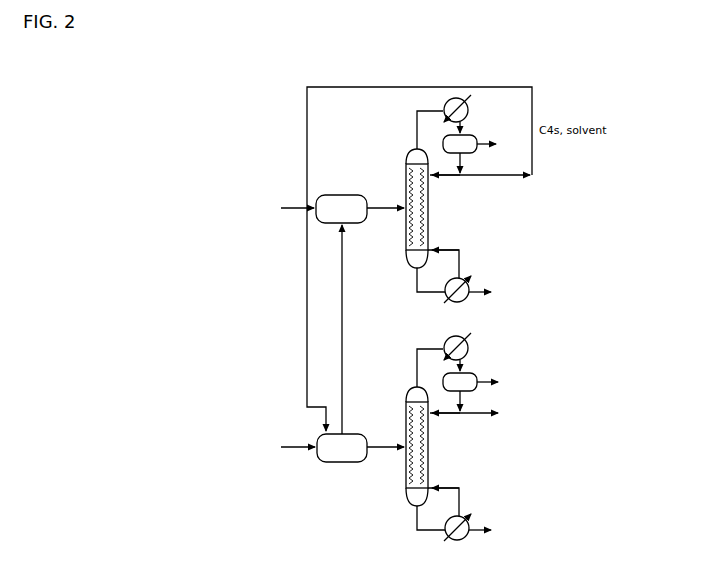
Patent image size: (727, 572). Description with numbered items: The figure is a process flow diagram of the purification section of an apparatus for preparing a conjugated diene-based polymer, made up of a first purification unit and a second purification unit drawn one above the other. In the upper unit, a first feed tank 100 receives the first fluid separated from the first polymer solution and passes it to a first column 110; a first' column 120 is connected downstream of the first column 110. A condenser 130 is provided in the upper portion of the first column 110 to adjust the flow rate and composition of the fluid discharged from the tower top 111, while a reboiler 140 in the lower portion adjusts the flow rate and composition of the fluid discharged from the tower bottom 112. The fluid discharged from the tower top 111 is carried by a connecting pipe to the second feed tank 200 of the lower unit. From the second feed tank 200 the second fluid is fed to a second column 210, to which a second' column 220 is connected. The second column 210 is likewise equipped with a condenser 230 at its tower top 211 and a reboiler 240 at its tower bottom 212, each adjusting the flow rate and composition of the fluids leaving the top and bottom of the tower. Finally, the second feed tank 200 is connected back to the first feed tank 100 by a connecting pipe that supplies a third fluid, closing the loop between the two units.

The first feed tank 100 is at (327, 219).
The first column 110 is at (430, 224).
The tower top of the first column 111 is at (405, 160).
The tower bottom of the first column 112 is at (431, 251).
The first' column 120 is at (494, 293).
The condenser 130 is at (465, 97).
The reboiler 140 is at (470, 283).
The second feed tank 200 is at (327, 457).
The second column 210 is at (430, 462).
The tower top of the second column 211 is at (405, 398).
The tower bottom of the second column 212 is at (431, 489).
The second' column 220 is at (494, 531).
The condenser 230 is at (465, 345).
The reboiler 240 is at (470, 516).